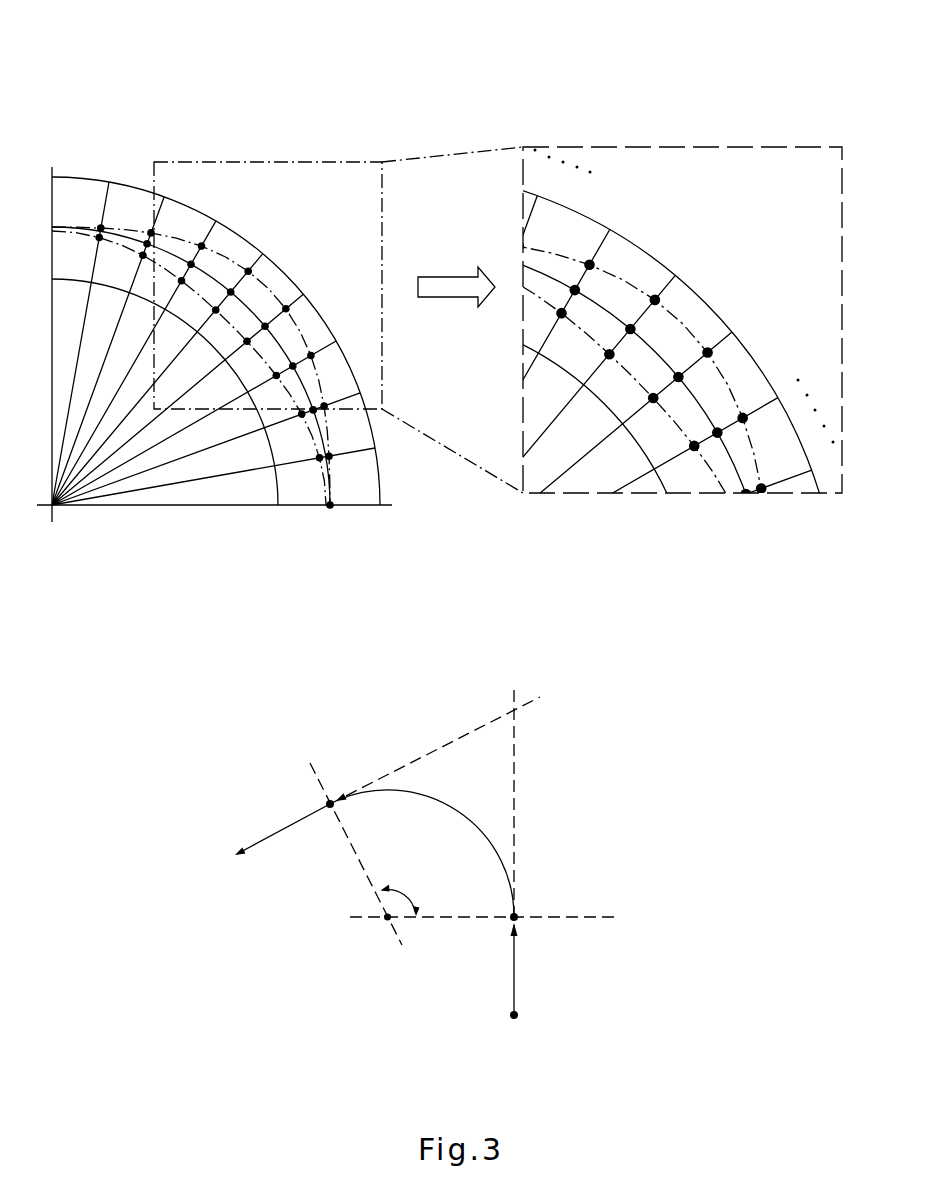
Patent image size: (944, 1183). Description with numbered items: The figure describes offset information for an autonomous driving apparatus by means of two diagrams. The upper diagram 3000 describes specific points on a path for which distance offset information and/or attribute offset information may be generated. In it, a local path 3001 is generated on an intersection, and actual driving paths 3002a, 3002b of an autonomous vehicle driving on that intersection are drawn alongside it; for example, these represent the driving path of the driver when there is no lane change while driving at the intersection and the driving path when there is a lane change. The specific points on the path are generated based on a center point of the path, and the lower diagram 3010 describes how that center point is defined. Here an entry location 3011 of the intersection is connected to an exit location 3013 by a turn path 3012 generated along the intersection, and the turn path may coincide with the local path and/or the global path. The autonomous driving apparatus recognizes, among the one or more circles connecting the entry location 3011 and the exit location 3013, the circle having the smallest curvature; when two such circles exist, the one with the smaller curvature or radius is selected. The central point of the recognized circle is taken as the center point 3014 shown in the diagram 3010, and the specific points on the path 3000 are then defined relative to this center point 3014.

The diagram of specific points on a path 3000 is at (460, 80).
The local path 3001 is at (737, 468).
The actual driving path 3002a is at (753, 463).
The actual driving path 3002b is at (696, 470).
The diagram of center point 3010 is at (422, 664).
The entry location 3011 is at (519, 915).
The turn path 3012 is at (483, 829).
The exit location 3013 is at (331, 799).
The center point 3014 is at (385, 925).